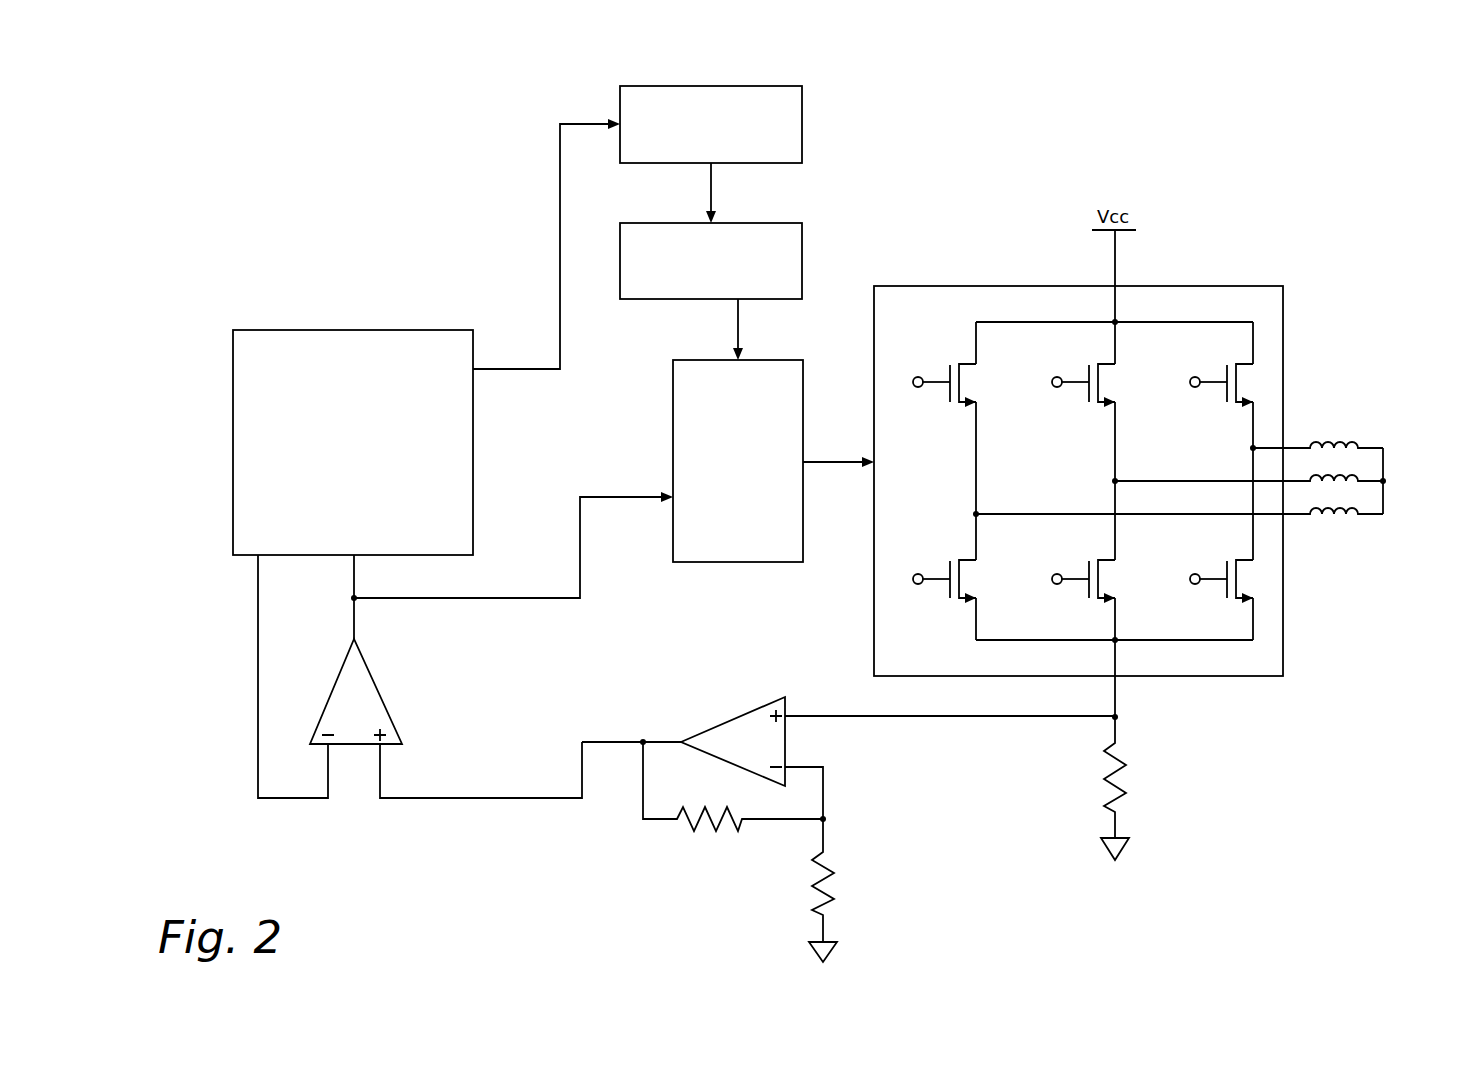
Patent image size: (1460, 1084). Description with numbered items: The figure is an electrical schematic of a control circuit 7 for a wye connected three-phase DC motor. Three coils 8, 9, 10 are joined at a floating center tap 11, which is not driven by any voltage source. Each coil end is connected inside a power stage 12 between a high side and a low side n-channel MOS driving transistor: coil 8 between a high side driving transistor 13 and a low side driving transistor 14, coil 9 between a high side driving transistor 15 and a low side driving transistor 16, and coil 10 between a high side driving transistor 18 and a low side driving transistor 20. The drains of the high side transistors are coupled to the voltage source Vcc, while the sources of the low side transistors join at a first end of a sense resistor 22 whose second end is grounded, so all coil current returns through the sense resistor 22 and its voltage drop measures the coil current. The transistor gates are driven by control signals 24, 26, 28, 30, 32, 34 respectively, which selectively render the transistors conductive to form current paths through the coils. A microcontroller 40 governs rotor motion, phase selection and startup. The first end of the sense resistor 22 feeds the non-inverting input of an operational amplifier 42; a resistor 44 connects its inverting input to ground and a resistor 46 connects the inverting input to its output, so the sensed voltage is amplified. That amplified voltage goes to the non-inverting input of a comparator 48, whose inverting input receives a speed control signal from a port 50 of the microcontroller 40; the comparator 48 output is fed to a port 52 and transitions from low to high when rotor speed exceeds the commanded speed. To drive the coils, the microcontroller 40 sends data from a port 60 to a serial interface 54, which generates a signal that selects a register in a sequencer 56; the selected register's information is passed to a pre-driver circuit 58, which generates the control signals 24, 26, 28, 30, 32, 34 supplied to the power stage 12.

The control circuit 7 is at (1138, 142).
The coil 8 is at (1316, 440).
The coil 9 is at (1356, 471).
The coil 10 is at (1335, 520).
The center tap 11 is at (1384, 482).
The power stage 12 is at (1228, 677).
The high side driving transistor 13 is at (1243, 364).
The low side driving transistor 14 is at (1243, 560).
The high side driving transistor 15 is at (1105, 364).
The low side driving transistor 16 is at (1105, 560).
The high side driving transistor 18 is at (966, 364).
The low side driving transistor 20 is at (966, 560).
The sense resistor 22 is at (1120, 777).
The control signal 24 is at (1194, 383).
The control signal 26 is at (1194, 580).
The control signal 28 is at (1056, 383).
The control signal 30 is at (1056, 580).
The control signal 32 is at (917, 383).
The control signal 34 is at (917, 580).
The microcontroller 40 is at (302, 330).
The operational amplifier 42 is at (733, 716).
The resistor 44 is at (830, 880).
The resistor 46 is at (700, 830).
The comparator 48 is at (384, 701).
The port 50 is at (260, 557).
The port 52 is at (356, 557).
The serial interface 54 is at (803, 131).
The sequencer 56 is at (803, 251).
The pre-driver circuit 58 is at (741, 562).
The port 60 is at (474, 371).